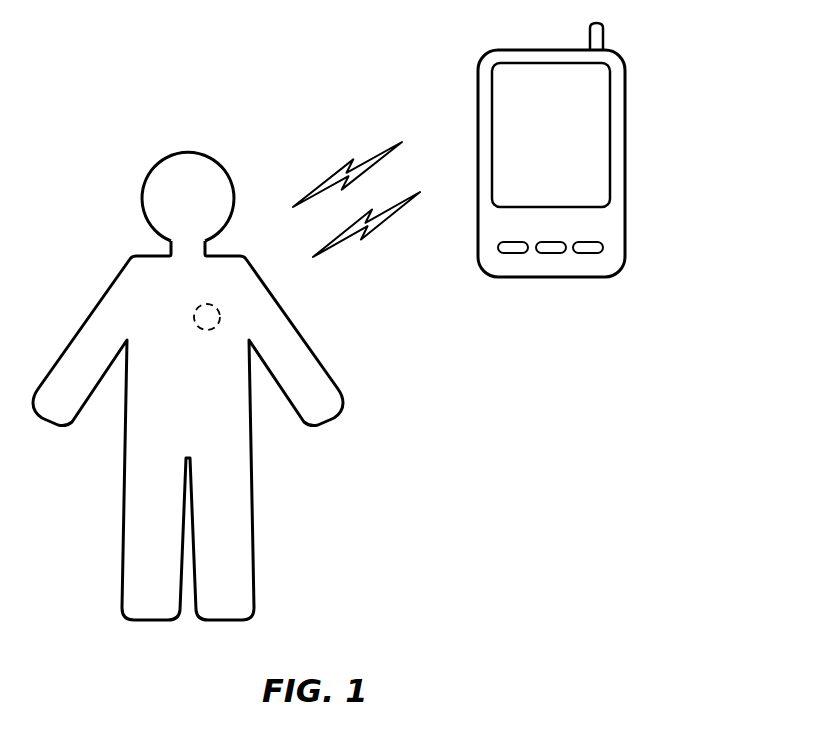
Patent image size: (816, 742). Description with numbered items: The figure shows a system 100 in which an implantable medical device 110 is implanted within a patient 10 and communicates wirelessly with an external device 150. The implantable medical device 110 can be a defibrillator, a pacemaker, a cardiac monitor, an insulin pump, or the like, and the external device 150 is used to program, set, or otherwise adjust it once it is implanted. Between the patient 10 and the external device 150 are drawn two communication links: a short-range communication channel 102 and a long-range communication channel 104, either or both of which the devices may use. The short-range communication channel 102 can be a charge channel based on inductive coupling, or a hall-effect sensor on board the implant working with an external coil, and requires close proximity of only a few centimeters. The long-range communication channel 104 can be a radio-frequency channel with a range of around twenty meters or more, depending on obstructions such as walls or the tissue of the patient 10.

The system 100 is at (142, 65).
The patient 10 is at (143, 255).
The implantable medical device 110 is at (220, 317).
The short-range communication channel 102 is at (343, 170).
The long-range communication channel 104 is at (371, 233).
The external device 150 is at (626, 165).